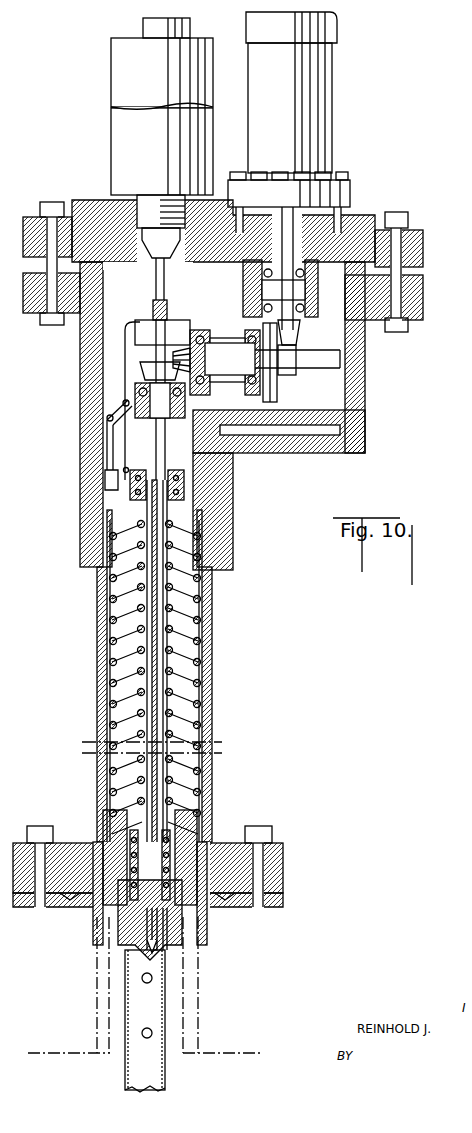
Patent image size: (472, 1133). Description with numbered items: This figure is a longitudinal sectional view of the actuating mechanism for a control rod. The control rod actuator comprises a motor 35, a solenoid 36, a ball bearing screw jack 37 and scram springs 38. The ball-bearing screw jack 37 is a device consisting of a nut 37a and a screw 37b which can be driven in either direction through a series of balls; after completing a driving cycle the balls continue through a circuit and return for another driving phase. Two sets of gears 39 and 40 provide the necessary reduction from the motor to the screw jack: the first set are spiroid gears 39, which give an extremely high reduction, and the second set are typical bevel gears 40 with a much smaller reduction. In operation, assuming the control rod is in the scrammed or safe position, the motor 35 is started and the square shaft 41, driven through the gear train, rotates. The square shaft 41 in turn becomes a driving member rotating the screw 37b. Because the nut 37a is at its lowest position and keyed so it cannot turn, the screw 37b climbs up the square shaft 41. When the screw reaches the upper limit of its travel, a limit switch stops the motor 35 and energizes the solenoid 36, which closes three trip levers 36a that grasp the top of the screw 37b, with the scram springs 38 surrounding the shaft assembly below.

The motor 35 is at (320, 133).
The solenoid 36 is at (120, 150).
The trip levers 36a is at (113, 458).
The ball bearing screw jack 37 is at (165, 915).
The nut 37a is at (165, 842).
The screw 37b is at (167, 813).
The scram springs 38 is at (200, 700).
The spiroid gears 39 is at (298, 337).
The bevel gears 40 is at (175, 358).
The square shaft 41 is at (190, 592).